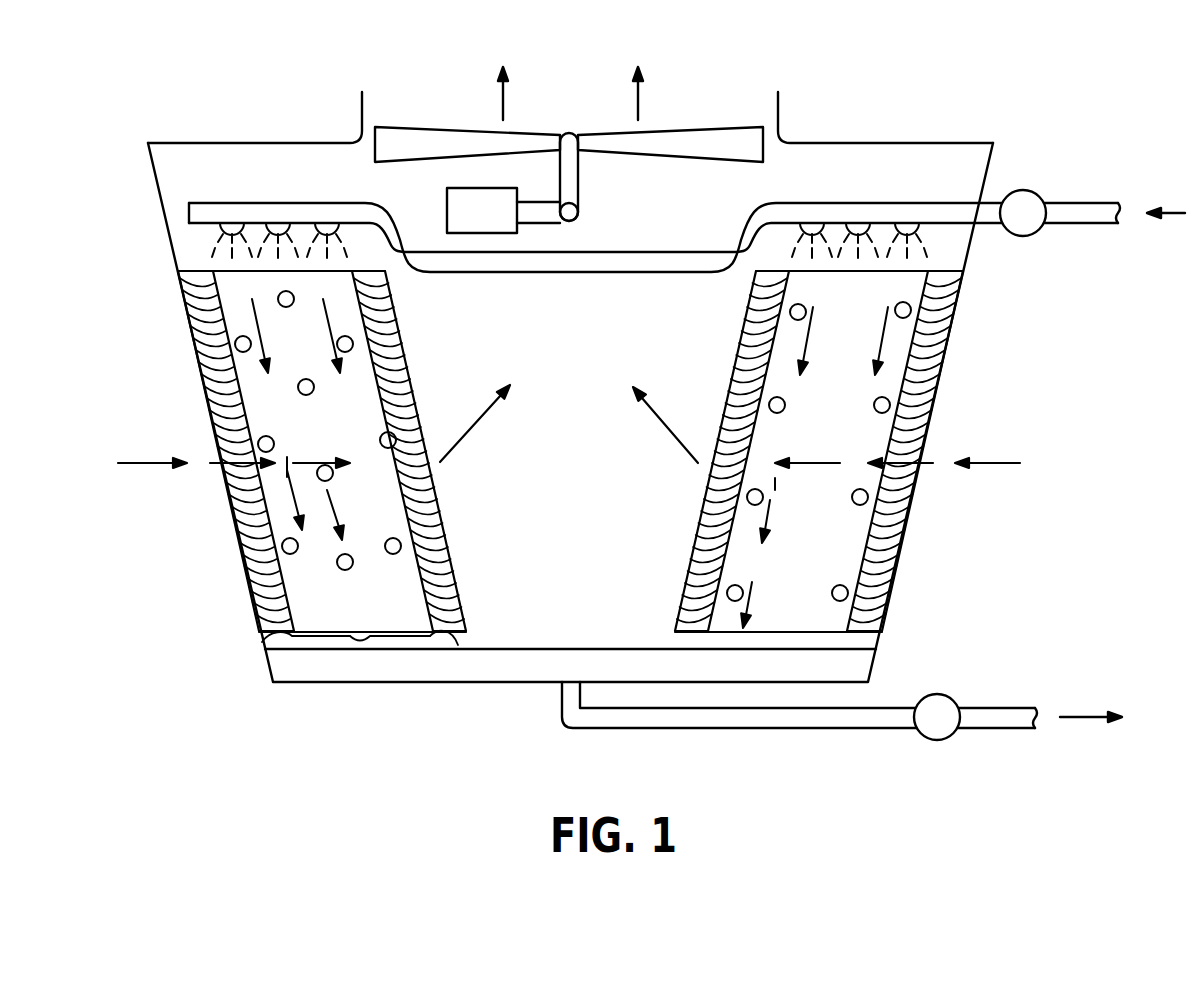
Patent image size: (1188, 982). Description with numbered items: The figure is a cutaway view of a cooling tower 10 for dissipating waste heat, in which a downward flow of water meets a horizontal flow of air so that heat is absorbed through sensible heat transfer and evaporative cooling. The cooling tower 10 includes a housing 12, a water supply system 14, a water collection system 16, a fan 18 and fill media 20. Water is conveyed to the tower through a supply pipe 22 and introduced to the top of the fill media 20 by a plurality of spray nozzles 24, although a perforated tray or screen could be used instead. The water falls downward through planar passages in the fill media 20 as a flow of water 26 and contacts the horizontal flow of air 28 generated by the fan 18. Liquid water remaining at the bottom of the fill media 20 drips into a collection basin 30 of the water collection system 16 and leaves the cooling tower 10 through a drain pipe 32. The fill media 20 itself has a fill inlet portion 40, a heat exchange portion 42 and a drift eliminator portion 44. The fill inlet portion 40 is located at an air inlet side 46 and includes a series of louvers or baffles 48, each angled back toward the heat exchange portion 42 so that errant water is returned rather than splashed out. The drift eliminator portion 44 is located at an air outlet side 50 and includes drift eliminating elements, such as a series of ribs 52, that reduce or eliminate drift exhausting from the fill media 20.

The cooling tower 10 is at (740, 55).
The housing 12 is at (852, 143).
The water supply system 14 is at (1005, 175).
The water collection system 16 is at (910, 673).
The fan 18 is at (667, 127).
The fill media 20 is at (565, 454).
The supply pipe 22 is at (1073, 226).
The spray nozzles 24 is at (225, 222).
The flow of water 26 is at (257, 352).
The flow of air 28 is at (1010, 441).
The collection basin 30 is at (557, 681).
The drain pipe 32 is at (730, 730).
The fill inlet portion 40 is at (277, 636).
The heat exchange portion 42 is at (360, 644).
The drift eliminator portion 44 is at (450, 637).
The air inlet side 46 is at (569, 454).
The baffles 48 is at (273, 602).
The air outlet side 50 is at (570, 451).
The ribs 52 is at (427, 503).